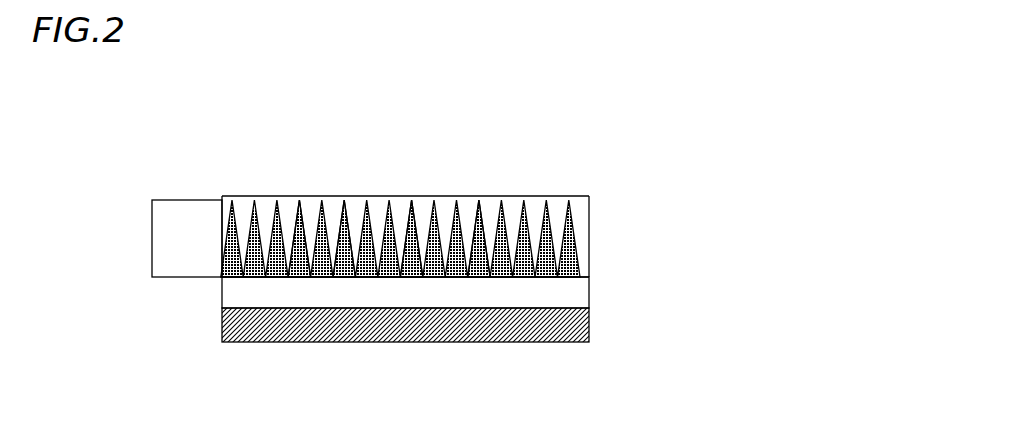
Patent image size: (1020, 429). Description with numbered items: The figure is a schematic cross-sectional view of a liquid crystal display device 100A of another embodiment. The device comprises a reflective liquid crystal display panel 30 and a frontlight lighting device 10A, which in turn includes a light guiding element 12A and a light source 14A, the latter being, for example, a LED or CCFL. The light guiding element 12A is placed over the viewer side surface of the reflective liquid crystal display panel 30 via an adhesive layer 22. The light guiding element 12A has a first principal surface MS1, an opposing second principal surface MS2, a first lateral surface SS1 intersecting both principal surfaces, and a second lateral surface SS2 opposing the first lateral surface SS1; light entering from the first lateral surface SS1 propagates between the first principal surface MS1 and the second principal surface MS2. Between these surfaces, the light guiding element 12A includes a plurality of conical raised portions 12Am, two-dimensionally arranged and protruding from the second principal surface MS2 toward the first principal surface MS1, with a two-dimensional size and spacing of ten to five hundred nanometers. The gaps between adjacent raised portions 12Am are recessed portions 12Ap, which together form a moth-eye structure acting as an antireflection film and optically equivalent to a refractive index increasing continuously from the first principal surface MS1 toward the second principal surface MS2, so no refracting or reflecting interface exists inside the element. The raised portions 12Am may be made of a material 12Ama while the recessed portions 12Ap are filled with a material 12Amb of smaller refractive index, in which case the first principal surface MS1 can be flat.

The liquid crystal display device 100A is at (405, 211).
The lighting device 10A is at (375, 203).
The light guiding element 12A is at (400, 180).
The raised portions 12Am is at (425, 208).
The recessed portions 12Ap is at (493, 204).
The material 12Amb is at (308, 210).
The material 12Ama is at (357, 210).
The light source 14A is at (198, 205).
The first principal surface MS1 is at (248, 197).
The second principal surface MS2 is at (237, 278).
The first lateral surface SS1 is at (222, 226).
The second lateral surface SS2 is at (605, 273).
The adhesive layer 22 is at (590, 293).
The reflective liquid crystal display panel 30 is at (590, 327).